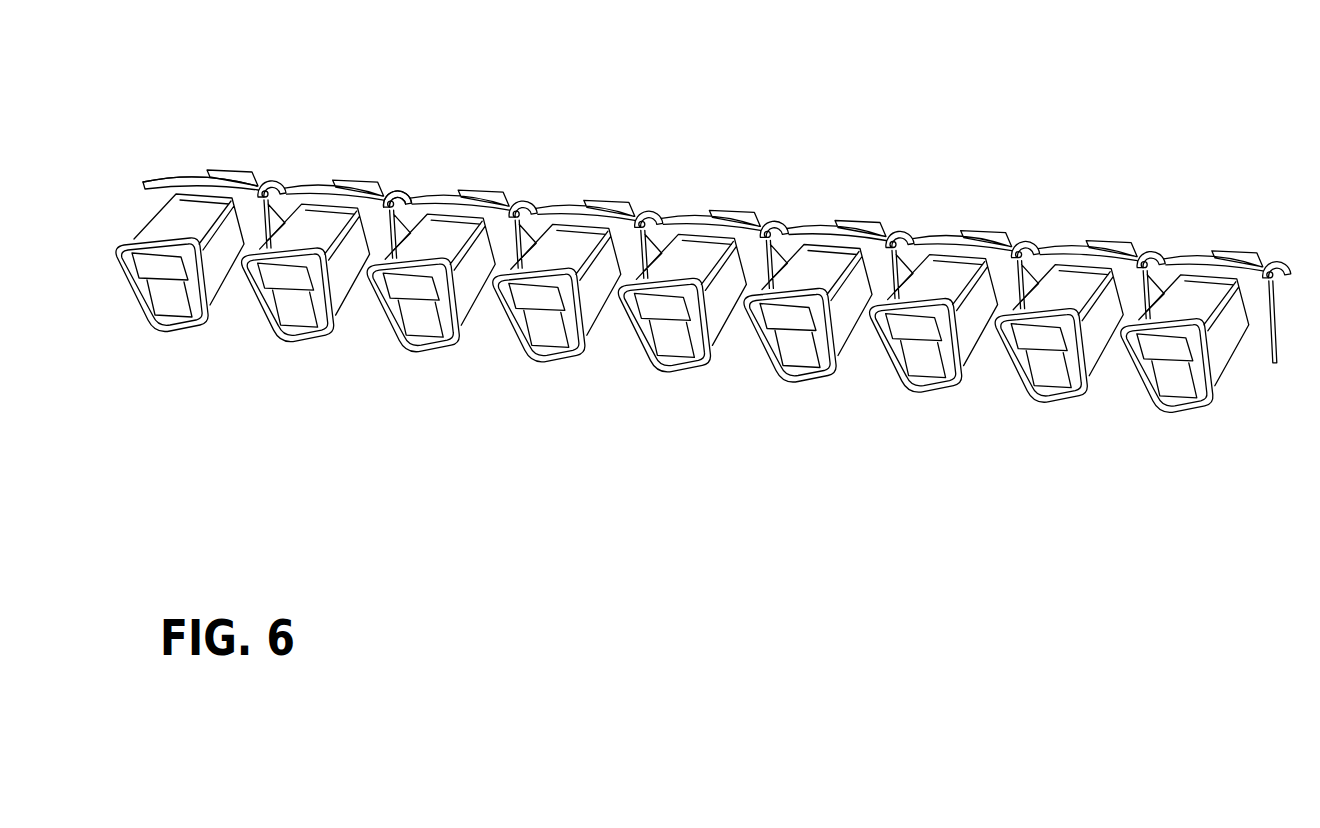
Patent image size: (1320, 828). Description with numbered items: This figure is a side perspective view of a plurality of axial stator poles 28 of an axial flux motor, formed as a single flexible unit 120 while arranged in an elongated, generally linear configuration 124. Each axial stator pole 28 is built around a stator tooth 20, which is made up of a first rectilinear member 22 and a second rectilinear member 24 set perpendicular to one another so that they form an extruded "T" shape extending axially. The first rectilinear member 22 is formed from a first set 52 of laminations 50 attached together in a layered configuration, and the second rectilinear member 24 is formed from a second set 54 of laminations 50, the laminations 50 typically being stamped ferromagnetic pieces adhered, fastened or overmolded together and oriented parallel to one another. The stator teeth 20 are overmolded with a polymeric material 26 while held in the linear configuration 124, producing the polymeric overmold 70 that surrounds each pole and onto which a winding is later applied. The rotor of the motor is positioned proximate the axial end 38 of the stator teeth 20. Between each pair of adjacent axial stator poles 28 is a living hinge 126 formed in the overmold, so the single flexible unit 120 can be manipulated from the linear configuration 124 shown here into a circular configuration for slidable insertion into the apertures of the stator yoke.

The stator tooth 20 is at (173, 290).
The first rectilinear member 22 is at (327, 259).
The second rectilinear member 24 is at (295, 352).
The polymeric material 26 is at (430, 344).
The axial stator pole 28 is at (701, 373).
The axial end 38 is at (960, 296).
The lamination 50 is at (1080, 319).
The first set of laminations 52 is at (1206, 343).
The second set of laminations 54 is at (1174, 432).
The polymeric overmold 70 is at (1087, 208).
The single flexible unit 120 is at (984, 218).
The linear configuration 124 is at (743, 180).
The living hinge 126 is at (398, 205).